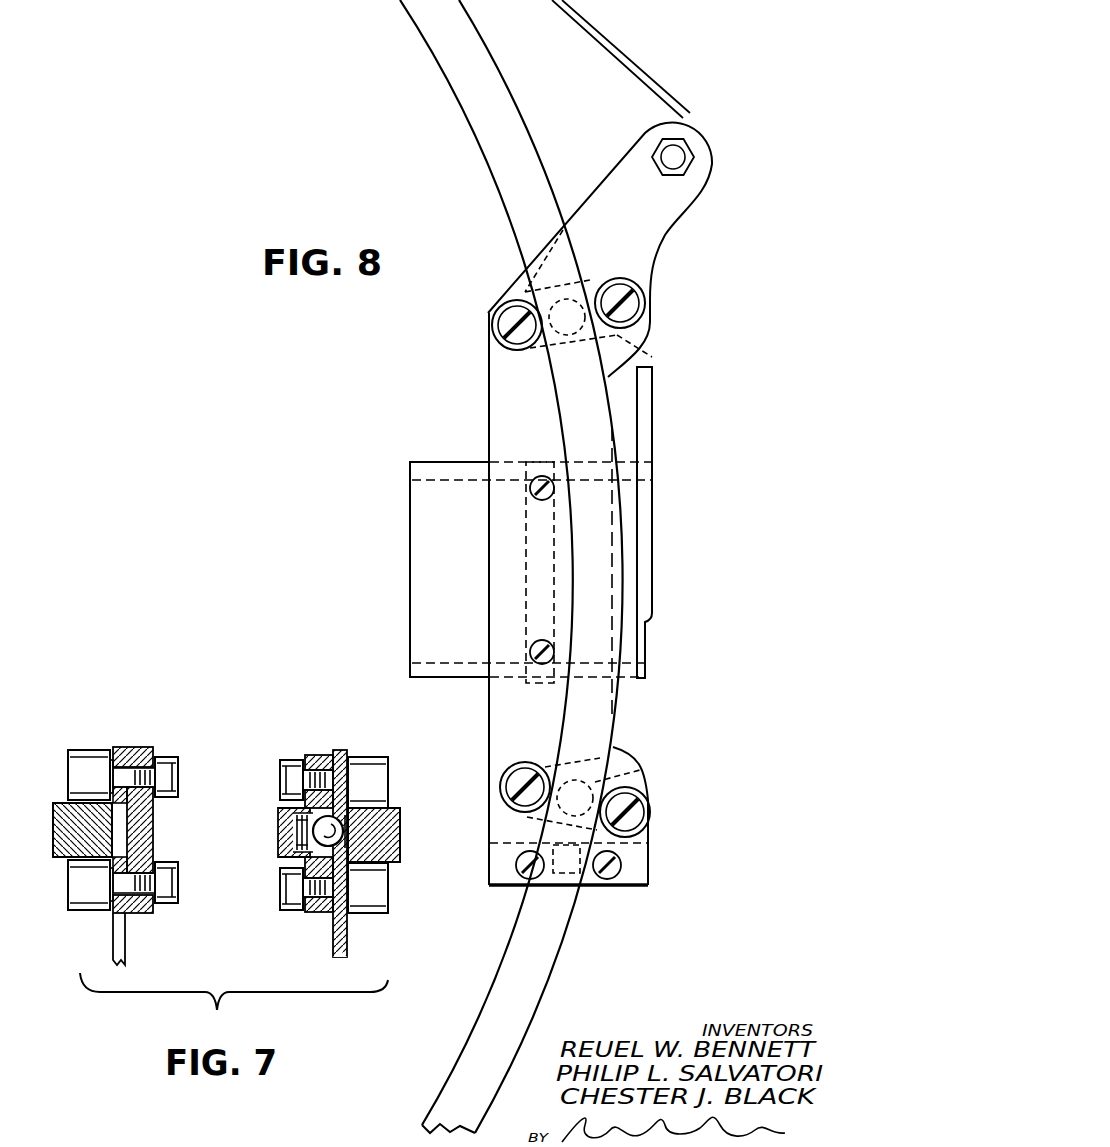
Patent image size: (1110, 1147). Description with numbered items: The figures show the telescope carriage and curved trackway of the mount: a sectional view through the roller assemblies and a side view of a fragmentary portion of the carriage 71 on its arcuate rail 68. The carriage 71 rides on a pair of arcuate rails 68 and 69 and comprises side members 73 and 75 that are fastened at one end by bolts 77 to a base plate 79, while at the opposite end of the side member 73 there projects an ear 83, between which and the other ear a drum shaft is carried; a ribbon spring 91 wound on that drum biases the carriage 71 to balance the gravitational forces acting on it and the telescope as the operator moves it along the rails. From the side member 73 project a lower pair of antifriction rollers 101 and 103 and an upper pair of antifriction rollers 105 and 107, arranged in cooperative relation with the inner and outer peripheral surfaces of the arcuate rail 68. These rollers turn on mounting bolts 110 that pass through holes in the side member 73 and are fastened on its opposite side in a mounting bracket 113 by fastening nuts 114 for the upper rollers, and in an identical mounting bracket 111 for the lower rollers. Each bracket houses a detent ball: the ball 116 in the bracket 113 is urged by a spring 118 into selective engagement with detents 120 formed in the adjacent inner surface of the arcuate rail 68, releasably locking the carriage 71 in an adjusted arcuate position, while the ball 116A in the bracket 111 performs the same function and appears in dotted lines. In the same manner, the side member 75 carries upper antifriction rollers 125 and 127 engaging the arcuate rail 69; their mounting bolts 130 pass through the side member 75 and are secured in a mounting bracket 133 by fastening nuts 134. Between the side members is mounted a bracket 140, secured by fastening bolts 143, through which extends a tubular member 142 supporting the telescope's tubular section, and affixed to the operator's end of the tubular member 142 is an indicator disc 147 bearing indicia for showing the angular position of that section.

In FIG. 8, the arcuate rail 68 is at (530, 133).
In FIG. 7, the arcuate rail 68 is at (400, 832).
In FIG. 8, the ribbon spring 91 is at (603, 35).
In FIG. 8, the ear 83 is at (672, 232).
In FIG. 8, the carriage 71 is at (452, 391).
In FIG. 8, the side member 73 is at (488, 713).
In FIG. 7, the side member 73 is at (343, 937).
In FIG. 8, the antifriction roller 105 is at (500, 303).
In FIG. 7, the antifriction roller 105 is at (367, 757).
In FIG. 8, the antifriction roller 107 is at (650, 306).
In FIG. 7, the antifriction roller 107 is at (388, 908).
In FIG. 8, the antifriction roller 101 is at (502, 777).
In FIG. 8, the antifriction roller 103 is at (650, 810).
In FIG. 8, the detent ball 116 is at (588, 263).
In FIG. 7, the detent ball 116 is at (320, 849).
In FIG. 8, the detent ball 116A is at (577, 780).
In FIG. 8, the mounting bracket 113 is at (649, 350).
In FIG. 7, the mounting bracket 113 is at (277, 820).
In FIG. 8, the mounting bracket 111 is at (640, 770).
In FIG. 8, the indicator disc 147 is at (650, 403).
In FIG. 8, the tubular member 142 is at (442, 462).
In FIG. 8, the bracket 140 is at (526, 547).
In FIG. 8, the fastening bolt 143 is at (538, 477).
In FIG. 8, the base plate 79 is at (637, 865).
In FIG. 8, the bolt 77 is at (517, 878).
In FIG. 7, the antifriction roller 125 is at (85, 760).
In FIG. 7, the antifriction roller 127 is at (73, 897).
In FIG. 7, the mounting bolt 130 is at (133, 757).
In FIG. 7, the mounting bracket 133 is at (143, 823).
In FIG. 7, the fastening nut 134 is at (163, 758).
In FIG. 7, the arcuate rail 69 is at (65, 832).
In FIG. 7, the side member 75 is at (125, 930).
In FIG. 7, the mounting bolt 110 is at (310, 755).
In FIG. 7, the fastening nut 114 is at (284, 778).
In FIG. 7, the spring 118 is at (298, 840).
In FIG. 7, the detent 120 is at (350, 827).